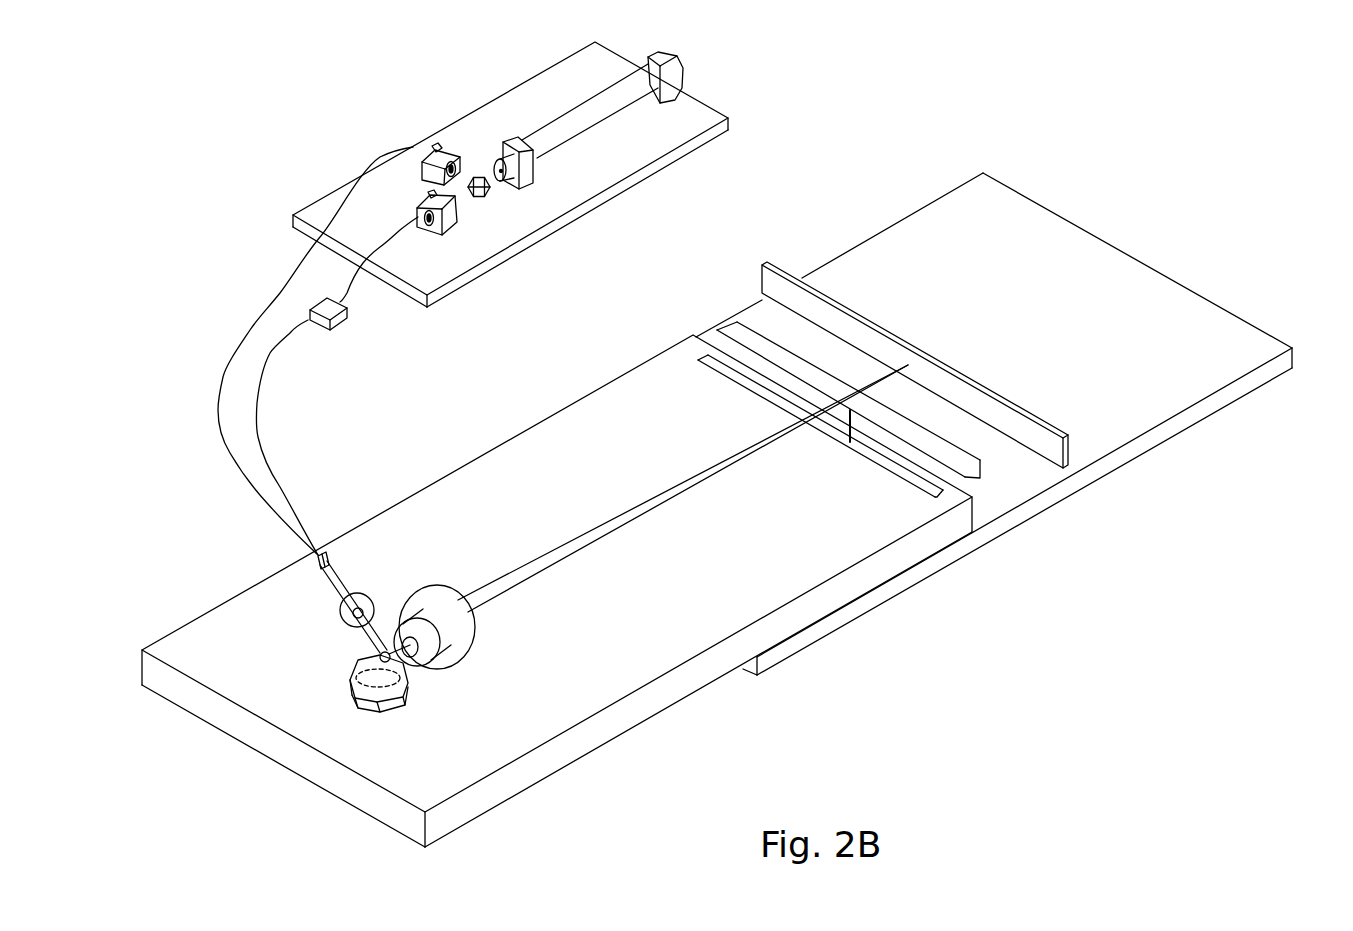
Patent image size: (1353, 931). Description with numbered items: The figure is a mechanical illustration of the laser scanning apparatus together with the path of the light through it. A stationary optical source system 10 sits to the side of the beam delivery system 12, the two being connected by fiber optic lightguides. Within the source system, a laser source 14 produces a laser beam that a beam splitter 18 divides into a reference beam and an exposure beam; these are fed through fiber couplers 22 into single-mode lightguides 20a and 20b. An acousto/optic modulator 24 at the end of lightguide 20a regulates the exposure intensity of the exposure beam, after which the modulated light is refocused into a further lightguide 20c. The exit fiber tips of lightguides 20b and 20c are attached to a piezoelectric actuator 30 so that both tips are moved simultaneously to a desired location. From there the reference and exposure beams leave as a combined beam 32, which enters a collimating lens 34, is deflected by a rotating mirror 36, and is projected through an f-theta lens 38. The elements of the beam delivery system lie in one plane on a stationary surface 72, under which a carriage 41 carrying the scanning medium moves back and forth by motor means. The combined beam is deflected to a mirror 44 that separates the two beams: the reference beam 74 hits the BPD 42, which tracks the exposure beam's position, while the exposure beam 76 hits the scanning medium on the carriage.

The stationary optical source system 10 is at (702, 85).
The beam delivery system 12 is at (637, 378).
The laser source 14 is at (595, 122).
The beam splitter 18 is at (484, 194).
The single-mode fiber optic lightguide 20a is at (357, 287).
The single-mode fiber optic lightguide 20b is at (240, 340).
The lightguide 20c is at (268, 367).
The fiber coupler 22 is at (437, 145).
The acousto/optic modulator 24 is at (335, 325).
The piezoelectric actuator 30 is at (330, 559).
The combined beam 32 is at (345, 582).
The collimating lens 34 is at (340, 618).
The rotating mirror 36 is at (365, 700).
The f-theta lens 38 is at (458, 650).
The moving carriage 41 is at (785, 647).
The BPD 42 is at (1020, 427).
The mirror 44 is at (730, 328).
The stationary surface 72 is at (633, 714).
The reference beam 74 is at (883, 382).
The exposure beam 76 is at (843, 427).